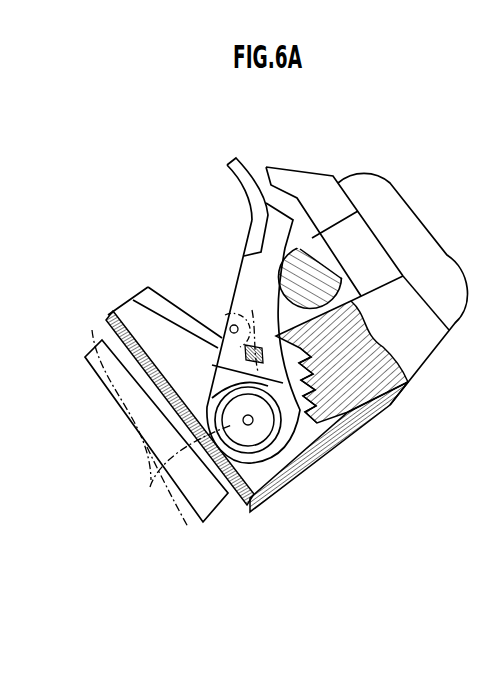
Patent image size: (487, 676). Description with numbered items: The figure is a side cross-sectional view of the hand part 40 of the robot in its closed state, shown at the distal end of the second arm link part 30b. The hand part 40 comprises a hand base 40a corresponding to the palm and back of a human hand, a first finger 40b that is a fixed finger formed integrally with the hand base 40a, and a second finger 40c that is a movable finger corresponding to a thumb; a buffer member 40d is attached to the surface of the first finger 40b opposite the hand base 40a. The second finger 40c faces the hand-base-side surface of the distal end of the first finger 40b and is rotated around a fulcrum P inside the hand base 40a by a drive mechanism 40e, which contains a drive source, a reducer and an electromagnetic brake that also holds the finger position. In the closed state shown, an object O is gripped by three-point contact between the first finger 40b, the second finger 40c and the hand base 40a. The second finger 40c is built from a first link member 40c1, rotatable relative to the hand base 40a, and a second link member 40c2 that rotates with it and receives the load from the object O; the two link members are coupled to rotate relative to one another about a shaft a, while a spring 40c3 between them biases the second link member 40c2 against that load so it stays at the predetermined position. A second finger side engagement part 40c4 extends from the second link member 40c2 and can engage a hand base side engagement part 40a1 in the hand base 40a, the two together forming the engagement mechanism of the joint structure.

The hand part 40 is at (407, 99).
The hand base 40a is at (425, 352).
The hand base side engagement part 40a1 is at (328, 400).
The first finger 40b is at (316, 182).
The second finger 40c is at (211, 175).
The first link member 40c1 is at (248, 418).
The second link member 40c2 is at (245, 258).
The spring 40c3 is at (252, 310).
The second finger side engagement part 40c4 is at (317, 428).
The buffer member 40d is at (417, 223).
The drive mechanism 40e is at (240, 440).
The second arm link part 30b is at (86, 352).
The object O is at (348, 263).
The shaft a is at (229, 322).
The fulcrum P is at (180, 423).